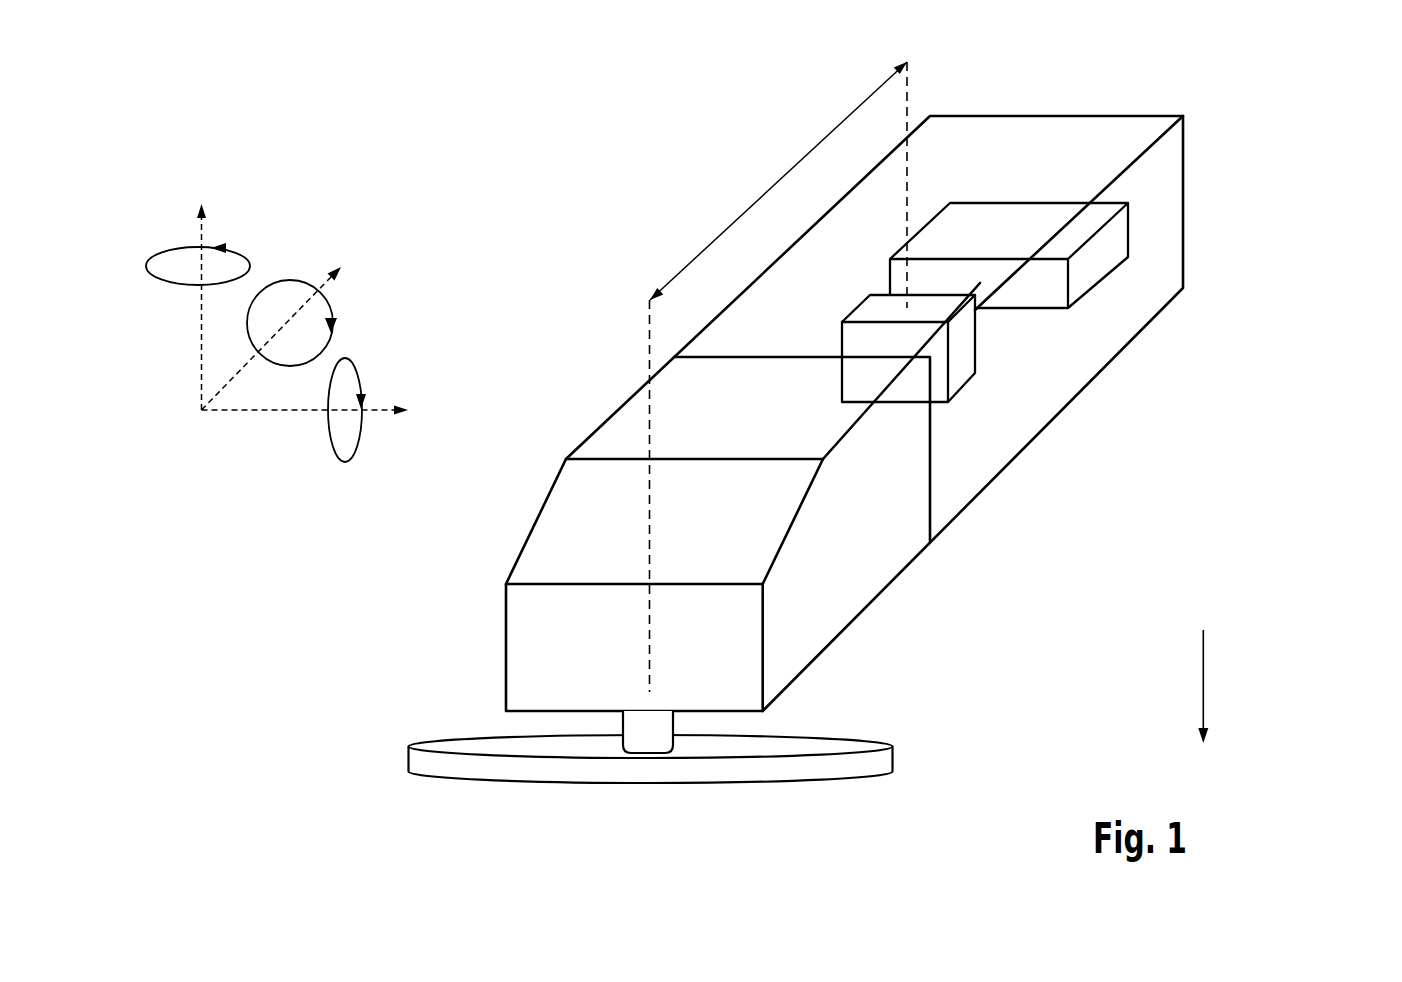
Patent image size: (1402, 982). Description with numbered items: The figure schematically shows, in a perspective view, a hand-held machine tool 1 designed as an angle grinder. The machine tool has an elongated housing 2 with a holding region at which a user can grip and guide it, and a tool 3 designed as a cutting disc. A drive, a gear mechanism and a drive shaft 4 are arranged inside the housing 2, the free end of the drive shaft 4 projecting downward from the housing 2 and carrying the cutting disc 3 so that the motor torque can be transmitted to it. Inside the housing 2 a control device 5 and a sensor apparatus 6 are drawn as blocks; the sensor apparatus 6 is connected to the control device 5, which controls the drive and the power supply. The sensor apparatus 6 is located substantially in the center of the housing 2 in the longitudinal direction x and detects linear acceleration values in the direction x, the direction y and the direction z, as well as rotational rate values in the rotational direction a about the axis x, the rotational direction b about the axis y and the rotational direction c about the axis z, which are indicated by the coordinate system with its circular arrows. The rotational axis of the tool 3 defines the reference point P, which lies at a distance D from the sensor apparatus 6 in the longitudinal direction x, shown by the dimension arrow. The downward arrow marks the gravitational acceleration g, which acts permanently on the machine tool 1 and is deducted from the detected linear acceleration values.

The hand-held machine tool 1 is at (1292, 224).
The housing 2 is at (958, 492).
The tool 3 is at (472, 768).
The drive shaft 4 is at (655, 738).
The control device 5 is at (1100, 262).
The sensor apparatus 6 is at (960, 373).
The reference point P is at (642, 730).
The distance D is at (778, 178).
The gravitational acceleration g is at (1203, 682).
The direction x is at (272, 326).
The direction y is at (200, 286).
The direction z is at (314, 409).
The rotational direction a is at (332, 313).
The rotational direction b is at (240, 253).
The rotational direction c is at (362, 386).